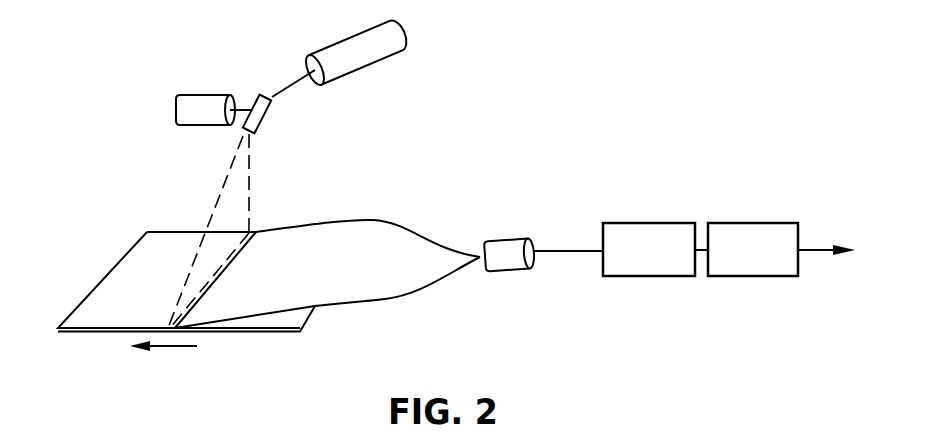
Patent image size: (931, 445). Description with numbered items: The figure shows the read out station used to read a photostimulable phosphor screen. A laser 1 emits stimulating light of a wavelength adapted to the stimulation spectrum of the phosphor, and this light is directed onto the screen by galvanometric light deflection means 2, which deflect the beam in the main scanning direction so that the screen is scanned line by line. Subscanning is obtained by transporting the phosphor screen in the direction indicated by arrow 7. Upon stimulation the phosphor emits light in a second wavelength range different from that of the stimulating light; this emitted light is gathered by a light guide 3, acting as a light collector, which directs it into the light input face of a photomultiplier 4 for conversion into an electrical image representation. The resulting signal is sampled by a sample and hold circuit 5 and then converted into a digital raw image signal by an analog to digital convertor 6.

The laser 1 is at (347, 37).
The galvanometric light deflection means 2 is at (264, 96).
The light guide 3 is at (332, 223).
The photomultiplier 4 is at (507, 238).
The sample and hold circuit 5 is at (645, 223).
The analog to digital convertor 6 is at (747, 223).
The arrow 7 is at (167, 350).